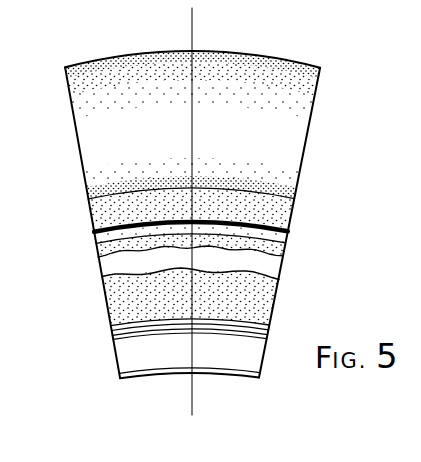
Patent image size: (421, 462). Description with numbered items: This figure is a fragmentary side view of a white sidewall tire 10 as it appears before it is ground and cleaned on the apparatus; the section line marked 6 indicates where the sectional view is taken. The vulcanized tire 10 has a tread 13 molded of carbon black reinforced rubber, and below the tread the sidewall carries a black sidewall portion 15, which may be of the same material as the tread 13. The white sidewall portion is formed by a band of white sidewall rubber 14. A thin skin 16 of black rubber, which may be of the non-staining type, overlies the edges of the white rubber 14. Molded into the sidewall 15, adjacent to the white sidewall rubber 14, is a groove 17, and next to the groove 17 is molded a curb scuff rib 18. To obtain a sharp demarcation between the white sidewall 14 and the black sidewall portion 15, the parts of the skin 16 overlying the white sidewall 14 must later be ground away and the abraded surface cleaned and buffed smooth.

The section line 6- 6 is at (168, 22).
The vulcanized tire 10 is at (328, 117).
The tread 13 is at (283, 62).
The white sidewall rubber 14 is at (115, 265).
The black sidewall portion 15 is at (288, 145).
The skin 16 is at (280, 250).
The groove 17 is at (95, 237).
The curb scuff rib 18 is at (280, 217).